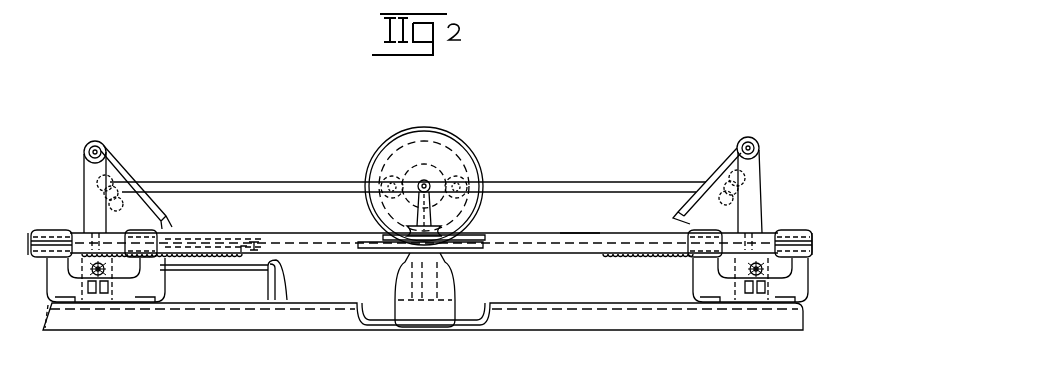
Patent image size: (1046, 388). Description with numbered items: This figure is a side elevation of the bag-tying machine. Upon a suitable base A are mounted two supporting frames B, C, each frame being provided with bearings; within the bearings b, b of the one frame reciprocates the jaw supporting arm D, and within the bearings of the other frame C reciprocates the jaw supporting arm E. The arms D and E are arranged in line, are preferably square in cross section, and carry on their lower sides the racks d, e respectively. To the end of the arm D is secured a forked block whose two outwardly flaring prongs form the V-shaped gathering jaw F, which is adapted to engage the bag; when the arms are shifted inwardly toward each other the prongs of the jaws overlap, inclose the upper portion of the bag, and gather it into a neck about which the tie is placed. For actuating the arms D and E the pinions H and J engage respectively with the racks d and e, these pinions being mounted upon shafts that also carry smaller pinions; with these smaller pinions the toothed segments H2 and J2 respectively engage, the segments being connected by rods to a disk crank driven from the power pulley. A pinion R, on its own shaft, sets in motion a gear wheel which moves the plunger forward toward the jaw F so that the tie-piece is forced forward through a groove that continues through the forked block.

The base A is at (277, 330).
The supporting frame B is at (54, 287).
The jaw supporting arm D is at (291, 238).
The jaw supporting arm E is at (549, 247).
The rack e is at (625, 257).
The bearing b is at (158, 238).
The toothed segment H2 is at (104, 150).
The pinion H is at (104, 274).
The rack d is at (223, 280).
The pinion R is at (253, 239).
The gathering jaw F is at (492, 236).
The toothed segment J2 is at (760, 160).
The supporting frame C is at (800, 228).
The pinion J is at (752, 292).